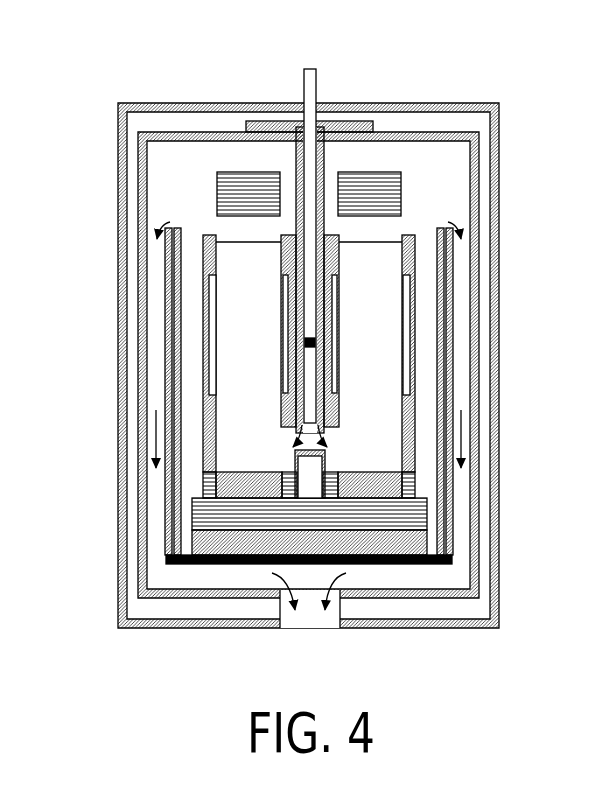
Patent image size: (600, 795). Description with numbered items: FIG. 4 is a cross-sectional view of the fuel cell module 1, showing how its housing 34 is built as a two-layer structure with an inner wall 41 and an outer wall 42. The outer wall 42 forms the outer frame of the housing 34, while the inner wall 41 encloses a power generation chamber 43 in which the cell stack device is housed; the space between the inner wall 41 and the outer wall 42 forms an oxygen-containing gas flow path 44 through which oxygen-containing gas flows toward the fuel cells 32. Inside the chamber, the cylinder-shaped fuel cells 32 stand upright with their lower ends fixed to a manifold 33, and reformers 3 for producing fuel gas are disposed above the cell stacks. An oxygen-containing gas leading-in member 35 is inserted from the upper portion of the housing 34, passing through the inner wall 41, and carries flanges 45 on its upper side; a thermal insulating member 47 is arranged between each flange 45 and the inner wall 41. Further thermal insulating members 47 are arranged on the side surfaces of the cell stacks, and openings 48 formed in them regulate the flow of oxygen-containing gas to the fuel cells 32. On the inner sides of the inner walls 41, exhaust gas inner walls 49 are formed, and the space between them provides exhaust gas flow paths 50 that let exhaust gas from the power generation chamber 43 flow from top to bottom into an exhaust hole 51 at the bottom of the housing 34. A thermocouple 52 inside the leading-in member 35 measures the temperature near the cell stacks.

The module 1 is at (119, 82).
The reformer 3 is at (390, 183).
The fuel cell 32 is at (385, 250).
The manifold 33 is at (400, 515).
The housing 34 is at (118, 103).
The oxygen-containing gas leading-in member 35 is at (298, 156).
The inner wall 41 is at (307, 342).
The outer wall 42 is at (443, 104).
The power generation chamber 43 is at (170, 156).
The oxygen-containing gas flow path 44 is at (136, 428).
The flange 45 is at (340, 122).
The thermal insulating member 47 is at (307, 306).
The opening 48 is at (212, 358).
The exhaust gas inner wall 49 is at (450, 277).
The exhaust gas flow path 50 is at (157, 508).
The exhaust hole 51 is at (280, 607).
The thermocouple 52 is at (314, 93).